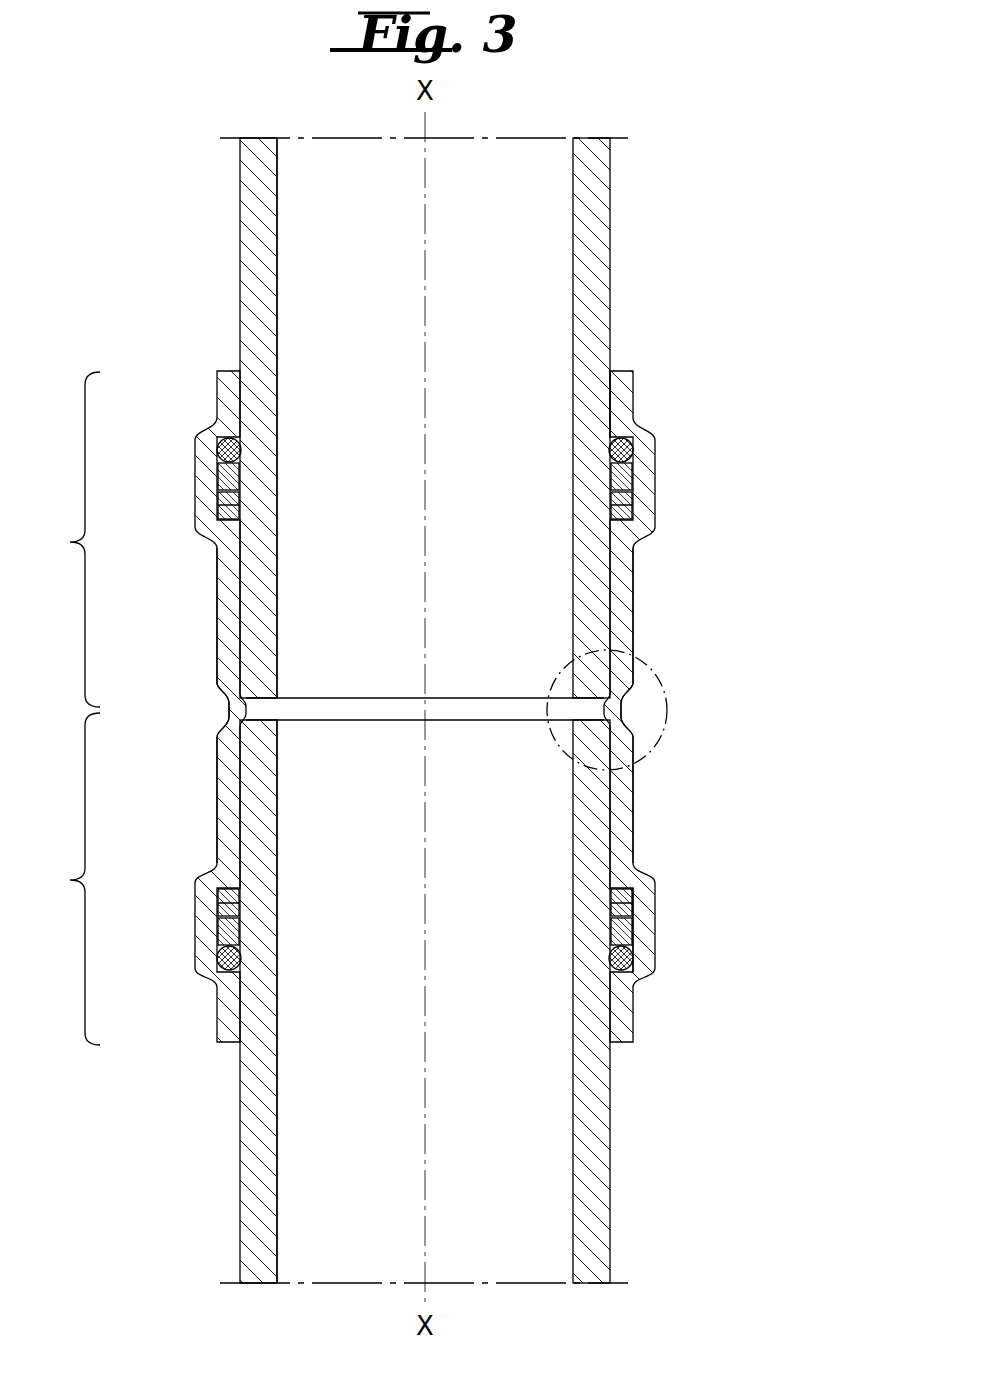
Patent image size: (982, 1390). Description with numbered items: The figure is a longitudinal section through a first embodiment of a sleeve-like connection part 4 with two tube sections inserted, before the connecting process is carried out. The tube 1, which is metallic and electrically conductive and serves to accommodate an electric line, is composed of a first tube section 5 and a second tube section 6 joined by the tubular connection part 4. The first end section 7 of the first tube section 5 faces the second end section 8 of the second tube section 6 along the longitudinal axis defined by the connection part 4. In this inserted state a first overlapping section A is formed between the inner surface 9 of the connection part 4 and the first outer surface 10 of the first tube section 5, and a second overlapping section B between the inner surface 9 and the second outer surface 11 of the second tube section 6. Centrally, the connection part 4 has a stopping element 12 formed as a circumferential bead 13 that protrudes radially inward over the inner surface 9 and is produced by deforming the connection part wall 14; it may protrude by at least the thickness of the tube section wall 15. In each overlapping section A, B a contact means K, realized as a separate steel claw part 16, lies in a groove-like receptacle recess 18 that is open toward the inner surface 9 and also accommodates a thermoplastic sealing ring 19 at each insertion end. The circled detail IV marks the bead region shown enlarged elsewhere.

The tube 1 is at (655, 170).
The connection part 4 is at (668, 490).
The first tube section 5 is at (595, 238).
The second tube section 6 is at (595, 1180).
The first end section 7 is at (592, 600).
The second end section 8 is at (592, 790).
The inner surface 9 is at (612, 412).
The first outer surface 10 is at (235, 614).
The second outer surface 11 is at (235, 815).
The stopping element 12 is at (236, 708).
The bead 13 is at (616, 708).
The connection part wall 14 is at (622, 826).
The tube section wall 15 is at (258, 222).
The claw part 16 is at (228, 503).
The receptacle recess 18 is at (222, 506).
The seal 19 is at (227, 447).
The contact means K is at (222, 478).
The first overlapping section A is at (73, 539).
The second overlapping section B is at (73, 879).
The detail IV is at (665, 692).